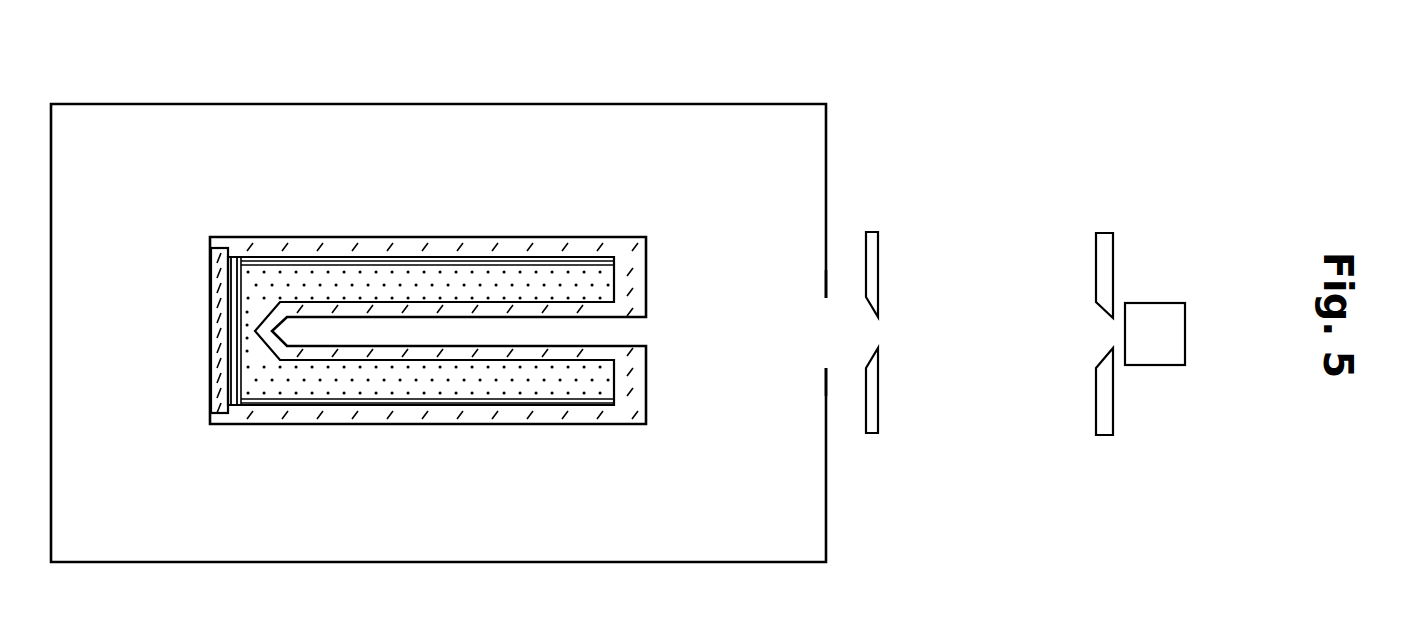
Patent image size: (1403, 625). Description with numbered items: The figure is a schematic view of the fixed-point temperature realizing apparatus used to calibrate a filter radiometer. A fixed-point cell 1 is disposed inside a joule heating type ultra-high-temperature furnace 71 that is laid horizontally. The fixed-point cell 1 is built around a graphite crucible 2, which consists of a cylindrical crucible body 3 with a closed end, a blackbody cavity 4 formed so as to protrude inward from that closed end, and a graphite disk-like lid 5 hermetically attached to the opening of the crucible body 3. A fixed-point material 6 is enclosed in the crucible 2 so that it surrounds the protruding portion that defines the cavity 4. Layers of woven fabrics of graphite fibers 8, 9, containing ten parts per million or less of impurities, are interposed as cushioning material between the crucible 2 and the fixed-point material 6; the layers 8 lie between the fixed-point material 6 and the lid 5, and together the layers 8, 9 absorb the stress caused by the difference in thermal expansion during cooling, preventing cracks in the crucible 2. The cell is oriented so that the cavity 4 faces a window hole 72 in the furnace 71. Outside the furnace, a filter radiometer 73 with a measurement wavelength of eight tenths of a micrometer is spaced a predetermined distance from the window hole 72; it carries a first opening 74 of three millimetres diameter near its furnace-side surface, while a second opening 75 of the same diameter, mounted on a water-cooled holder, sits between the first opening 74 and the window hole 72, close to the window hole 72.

The fixed-point cell 1 is at (408, 316).
The crucible 2 is at (596, 237).
The crucible body 3 is at (577, 414).
The cavity 4 is at (408, 326).
The lid 5 is at (210, 355).
The fixed-point material 6 is at (428, 383).
The layers of woven fabrics of graphite fibers 8 is at (352, 403).
The layers of woven fabrics of graphite fibers 9 is at (232, 292).
The ultra-high-temperature furnace 71 is at (592, 103).
The window hole 72 is at (823, 325).
The filter radiometer 73 is at (1186, 330).
The first opening 74 is at (1103, 233).
The second opening 75 is at (870, 232).